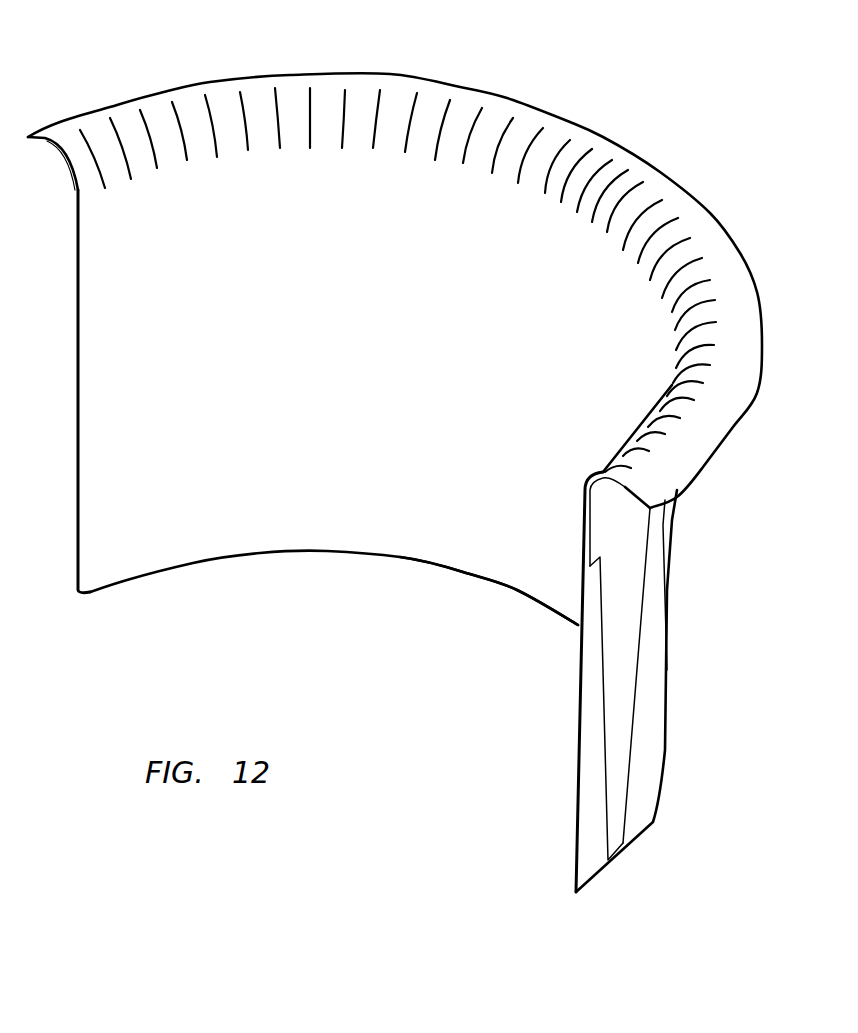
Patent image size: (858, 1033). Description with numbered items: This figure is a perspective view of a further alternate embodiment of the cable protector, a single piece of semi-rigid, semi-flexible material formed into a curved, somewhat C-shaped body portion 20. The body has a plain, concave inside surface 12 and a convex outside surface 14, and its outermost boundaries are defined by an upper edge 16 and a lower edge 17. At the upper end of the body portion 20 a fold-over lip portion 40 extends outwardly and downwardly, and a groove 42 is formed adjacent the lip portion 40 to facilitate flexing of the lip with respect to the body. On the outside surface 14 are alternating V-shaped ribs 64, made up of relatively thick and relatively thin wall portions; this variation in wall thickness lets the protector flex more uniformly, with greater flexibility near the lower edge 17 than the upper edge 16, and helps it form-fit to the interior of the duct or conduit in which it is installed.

The inside surface 12 is at (375, 518).
The outside surface 14 is at (667, 730).
The upper edge 16 is at (465, 88).
The lower edge 17 is at (465, 573).
The body portion 20 is at (740, 629).
The lip portion 40 is at (723, 425).
The groove 42 is at (623, 487).
The V-shaped ribs 64 is at (613, 823).